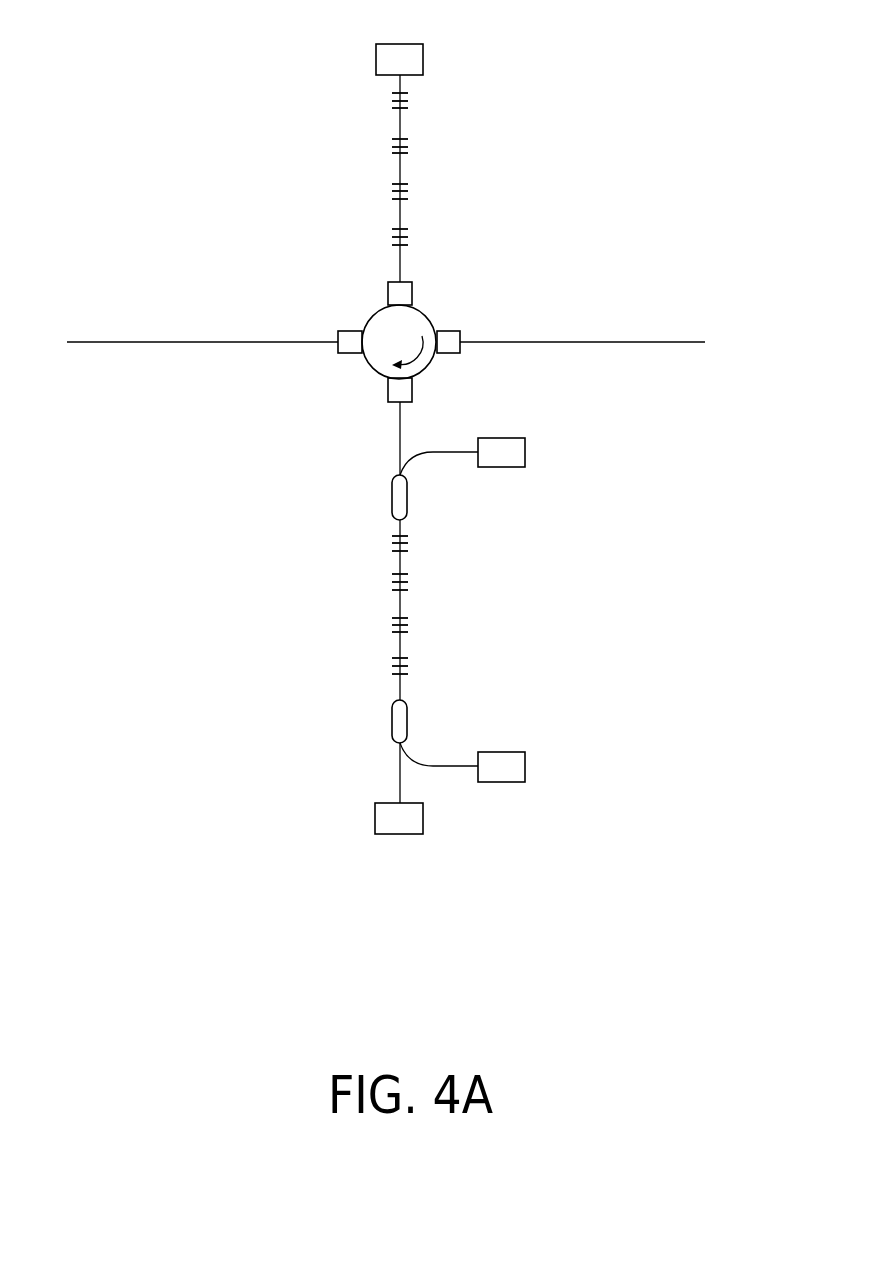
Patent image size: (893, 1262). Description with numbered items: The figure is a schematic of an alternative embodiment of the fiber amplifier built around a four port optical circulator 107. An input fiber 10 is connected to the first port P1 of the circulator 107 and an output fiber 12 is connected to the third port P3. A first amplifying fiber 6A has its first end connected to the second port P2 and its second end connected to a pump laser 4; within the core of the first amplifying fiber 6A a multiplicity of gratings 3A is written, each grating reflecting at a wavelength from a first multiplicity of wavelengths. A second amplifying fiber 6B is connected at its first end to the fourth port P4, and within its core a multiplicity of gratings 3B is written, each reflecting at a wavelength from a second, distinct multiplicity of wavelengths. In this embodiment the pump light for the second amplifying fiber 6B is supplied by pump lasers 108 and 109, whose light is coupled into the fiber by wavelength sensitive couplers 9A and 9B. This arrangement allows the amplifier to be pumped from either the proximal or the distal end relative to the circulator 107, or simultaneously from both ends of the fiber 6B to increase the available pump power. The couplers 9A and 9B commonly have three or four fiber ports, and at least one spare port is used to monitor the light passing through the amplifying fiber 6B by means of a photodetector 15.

The pump laser 4 is at (423, 52).
The gratings 3A is at (413, 145).
The first amplifying fiber 6A is at (400, 212).
The circulator 107 is at (423, 331).
The first port P1 is at (335, 328).
The second port P2 is at (416, 282).
The third port P3 is at (460, 327).
The fourth port P4 is at (416, 393).
The input fiber 10 is at (88, 342).
The output fiber 12 is at (663, 342).
The wavelength sensitive coupler 9A is at (392, 498).
The pump laser 108 is at (525, 445).
The gratings 3B is at (410, 543).
The second amplifying fiber 6B is at (400, 603).
The wavelength sensitive coupler 9B is at (392, 723).
The pump laser 109 is at (525, 758).
The photodetector 15 is at (423, 813).